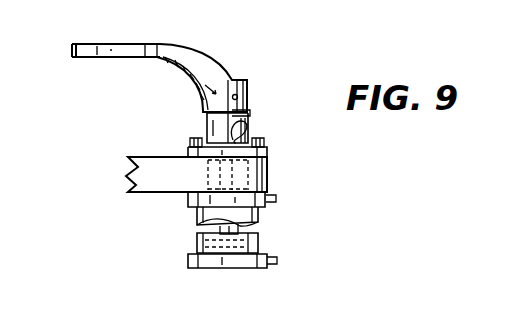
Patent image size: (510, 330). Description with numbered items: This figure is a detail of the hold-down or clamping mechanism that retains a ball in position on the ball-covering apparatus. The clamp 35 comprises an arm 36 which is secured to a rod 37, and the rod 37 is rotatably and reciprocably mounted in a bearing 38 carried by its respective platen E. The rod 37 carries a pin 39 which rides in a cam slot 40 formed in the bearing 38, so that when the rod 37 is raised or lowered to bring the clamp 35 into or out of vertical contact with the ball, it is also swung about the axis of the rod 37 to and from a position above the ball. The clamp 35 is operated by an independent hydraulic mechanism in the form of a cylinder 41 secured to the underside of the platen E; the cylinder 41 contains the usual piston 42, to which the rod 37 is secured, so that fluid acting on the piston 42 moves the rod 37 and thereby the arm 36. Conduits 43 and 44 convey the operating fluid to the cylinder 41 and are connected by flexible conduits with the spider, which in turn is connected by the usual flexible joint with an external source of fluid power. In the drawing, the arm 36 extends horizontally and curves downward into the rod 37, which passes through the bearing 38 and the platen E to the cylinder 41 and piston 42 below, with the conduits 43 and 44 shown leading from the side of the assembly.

The clamp 35 is at (135, 43).
The arm 36 is at (190, 55).
The rod 37 is at (250, 112).
The bearing 38 is at (247, 128).
The pin 39 is at (250, 135).
The cam slot 40 is at (223, 128).
The platen E is at (268, 163).
The cylinder 41 is at (262, 211).
The piston 42 is at (262, 239).
The conduit 43 is at (277, 198).
The conduit 44 is at (277, 261).